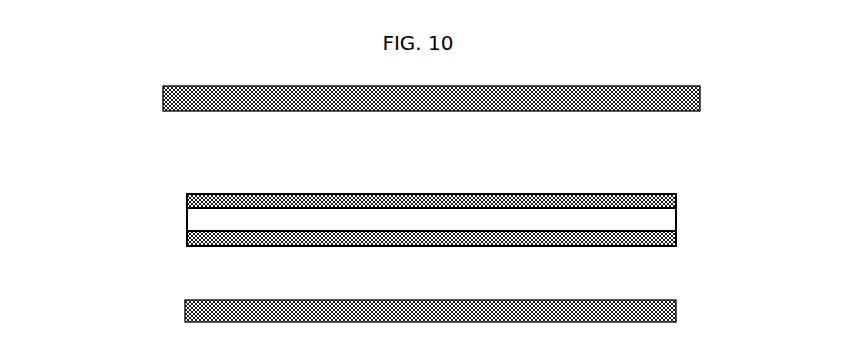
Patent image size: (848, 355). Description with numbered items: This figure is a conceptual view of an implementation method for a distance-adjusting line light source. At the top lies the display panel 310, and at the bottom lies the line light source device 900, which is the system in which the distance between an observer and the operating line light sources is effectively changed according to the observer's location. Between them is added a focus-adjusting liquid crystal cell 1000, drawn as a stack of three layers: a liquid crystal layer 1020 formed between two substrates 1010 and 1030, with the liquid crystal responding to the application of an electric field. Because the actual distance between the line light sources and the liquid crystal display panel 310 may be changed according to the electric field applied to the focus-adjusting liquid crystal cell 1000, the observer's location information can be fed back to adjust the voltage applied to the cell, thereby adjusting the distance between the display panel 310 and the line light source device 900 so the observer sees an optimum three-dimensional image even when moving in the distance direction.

The display panel 310 is at (406, 98).
The line light source device 900 is at (403, 311).
The focus-adjusting liquid crystal cell 1000 is at (407, 224).
The substrate 1010 is at (676, 240).
The liquid crystal layer 1020 is at (200, 224).
The substrate 1030 is at (676, 202).